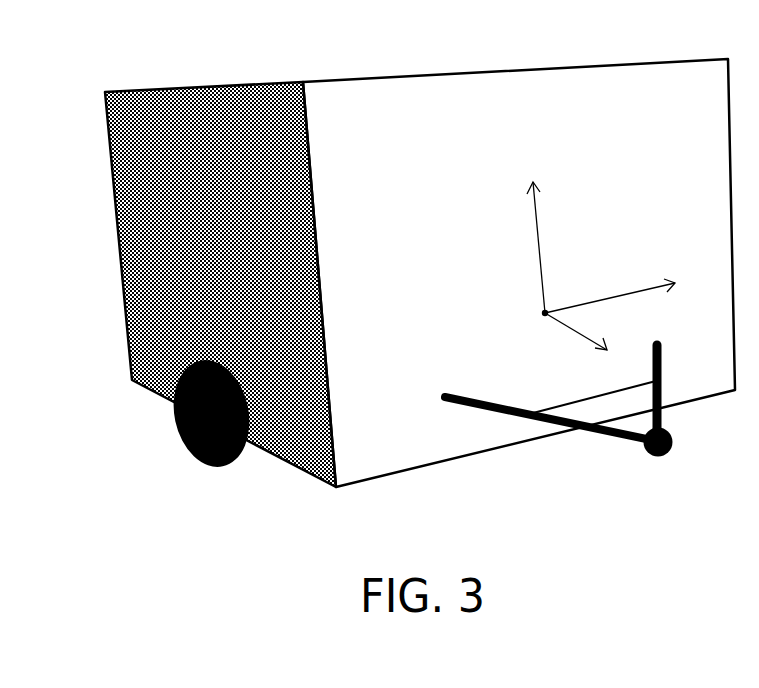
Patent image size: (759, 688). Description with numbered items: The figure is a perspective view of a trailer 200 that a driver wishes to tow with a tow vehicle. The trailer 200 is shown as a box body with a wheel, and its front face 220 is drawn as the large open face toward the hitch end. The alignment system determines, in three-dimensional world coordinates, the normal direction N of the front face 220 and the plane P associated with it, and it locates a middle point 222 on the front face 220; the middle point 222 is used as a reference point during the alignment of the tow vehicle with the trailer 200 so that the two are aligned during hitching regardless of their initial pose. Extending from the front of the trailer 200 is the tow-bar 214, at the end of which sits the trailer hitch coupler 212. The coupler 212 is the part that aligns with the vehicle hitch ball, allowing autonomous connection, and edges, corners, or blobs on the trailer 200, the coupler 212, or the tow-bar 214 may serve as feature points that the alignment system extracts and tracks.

The trailer 200 is at (322, 46).
The front face 220 is at (645, 144).
The middle point 222 is at (542, 313).
The tow-bar 214 is at (594, 434).
The trailer hitch coupler 212 is at (648, 453).